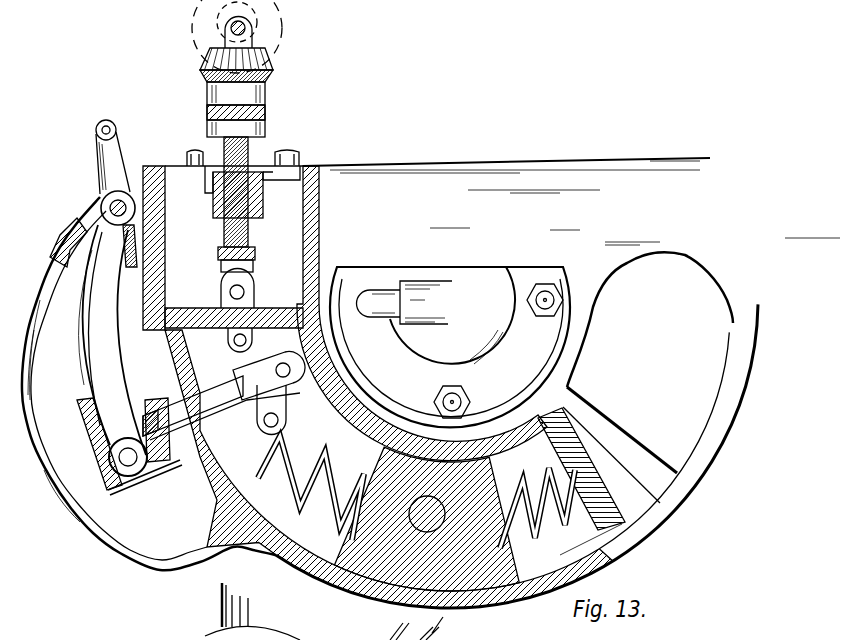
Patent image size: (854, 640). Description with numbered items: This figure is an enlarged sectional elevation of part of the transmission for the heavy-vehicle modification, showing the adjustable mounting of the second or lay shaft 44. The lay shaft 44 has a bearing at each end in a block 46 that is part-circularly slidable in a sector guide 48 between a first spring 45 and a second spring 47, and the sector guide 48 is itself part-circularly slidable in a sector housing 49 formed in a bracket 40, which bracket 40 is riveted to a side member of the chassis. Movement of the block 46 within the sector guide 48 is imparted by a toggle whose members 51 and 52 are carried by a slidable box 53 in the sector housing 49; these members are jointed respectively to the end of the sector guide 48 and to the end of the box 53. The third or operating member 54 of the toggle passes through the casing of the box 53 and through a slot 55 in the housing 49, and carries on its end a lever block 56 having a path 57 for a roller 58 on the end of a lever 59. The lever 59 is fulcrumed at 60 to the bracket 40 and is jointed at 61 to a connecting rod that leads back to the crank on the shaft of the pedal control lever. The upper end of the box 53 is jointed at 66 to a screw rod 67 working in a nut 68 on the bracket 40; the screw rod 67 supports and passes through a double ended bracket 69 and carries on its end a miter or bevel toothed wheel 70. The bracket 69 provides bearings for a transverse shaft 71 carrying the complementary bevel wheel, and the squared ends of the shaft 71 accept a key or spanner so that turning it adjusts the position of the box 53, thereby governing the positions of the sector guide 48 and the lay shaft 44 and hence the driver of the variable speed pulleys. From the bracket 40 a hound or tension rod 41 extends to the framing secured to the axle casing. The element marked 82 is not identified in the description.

The bracket 40 is at (491, 383).
The hound or tension rod 41 is at (368, 290).
The second or lay shaft 44 is at (430, 500).
The spring 45 is at (521, 490).
The block 46 is at (495, 563).
The spring 47 is at (360, 475).
The sector guide 48 is at (579, 539).
The sector housing 49 is at (583, 469).
The toggle member 51 is at (300, 393).
The toggle member 52 is at (253, 353).
The slidable box 53 is at (193, 308).
The operating member 54 is at (250, 403).
The slot 55 is at (203, 485).
The lever block 56 is at (170, 467).
The path 57 is at (120, 488).
The roller 58 is at (117, 442).
The lever 59 is at (93, 322).
The fulcrum 60 is at (112, 207).
The joint 61 is at (117, 130).
The joint 66 is at (245, 290).
The screw rod 67 is at (250, 233).
The nut 68 is at (263, 197).
The double ended bracket 69 is at (207, 113).
The miter or bevel toothed wheel 70 is at (270, 72).
The transverse shaft 71 is at (252, 33).
The member 82 is at (222, 603).